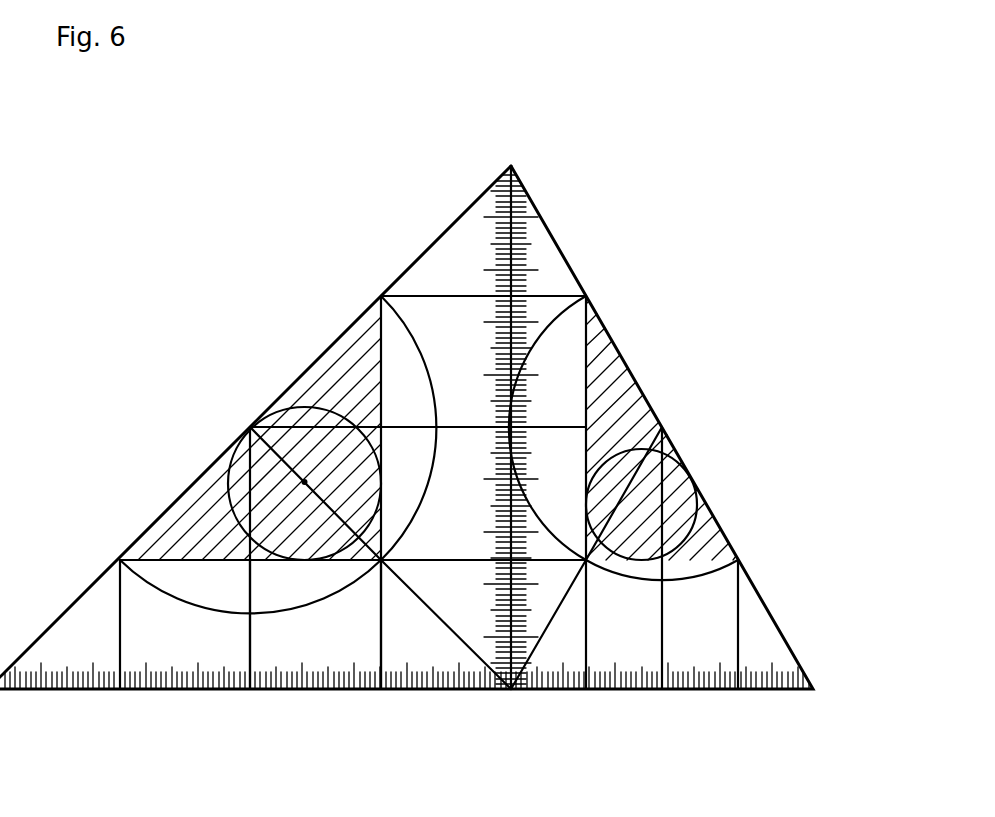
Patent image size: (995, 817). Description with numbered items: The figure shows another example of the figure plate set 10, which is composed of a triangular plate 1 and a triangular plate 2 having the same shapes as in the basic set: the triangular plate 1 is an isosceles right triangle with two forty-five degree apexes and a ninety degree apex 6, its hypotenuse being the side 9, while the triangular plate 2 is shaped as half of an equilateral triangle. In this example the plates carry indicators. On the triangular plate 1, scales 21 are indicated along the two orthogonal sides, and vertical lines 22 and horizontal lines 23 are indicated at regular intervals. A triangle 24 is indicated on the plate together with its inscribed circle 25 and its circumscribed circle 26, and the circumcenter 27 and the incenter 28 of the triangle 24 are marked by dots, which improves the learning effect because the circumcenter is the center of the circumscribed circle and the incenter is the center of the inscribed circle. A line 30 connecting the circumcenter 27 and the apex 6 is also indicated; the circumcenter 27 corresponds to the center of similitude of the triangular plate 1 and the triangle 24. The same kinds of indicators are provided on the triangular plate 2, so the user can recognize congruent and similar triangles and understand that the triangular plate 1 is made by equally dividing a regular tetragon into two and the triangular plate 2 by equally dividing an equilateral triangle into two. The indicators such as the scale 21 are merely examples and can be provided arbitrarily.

The triangular plate 1 is at (256, 381).
The triangular plate 2 is at (692, 390).
The apex 6 is at (511, 690).
The side 9 is at (140, 536).
The figure plate set 10 is at (634, 263).
The scales 21 is at (308, 690).
The vertical lines 22 is at (250, 632).
The horizontal lines 23 is at (442, 560).
The triangle 24 is at (333, 360).
The inscribed circle 25 is at (303, 405).
The circumscribed circle 26 is at (425, 335).
The circumcenter 27 is at (247, 427).
The incenter 28 is at (302, 482).
The line 30 is at (403, 583).